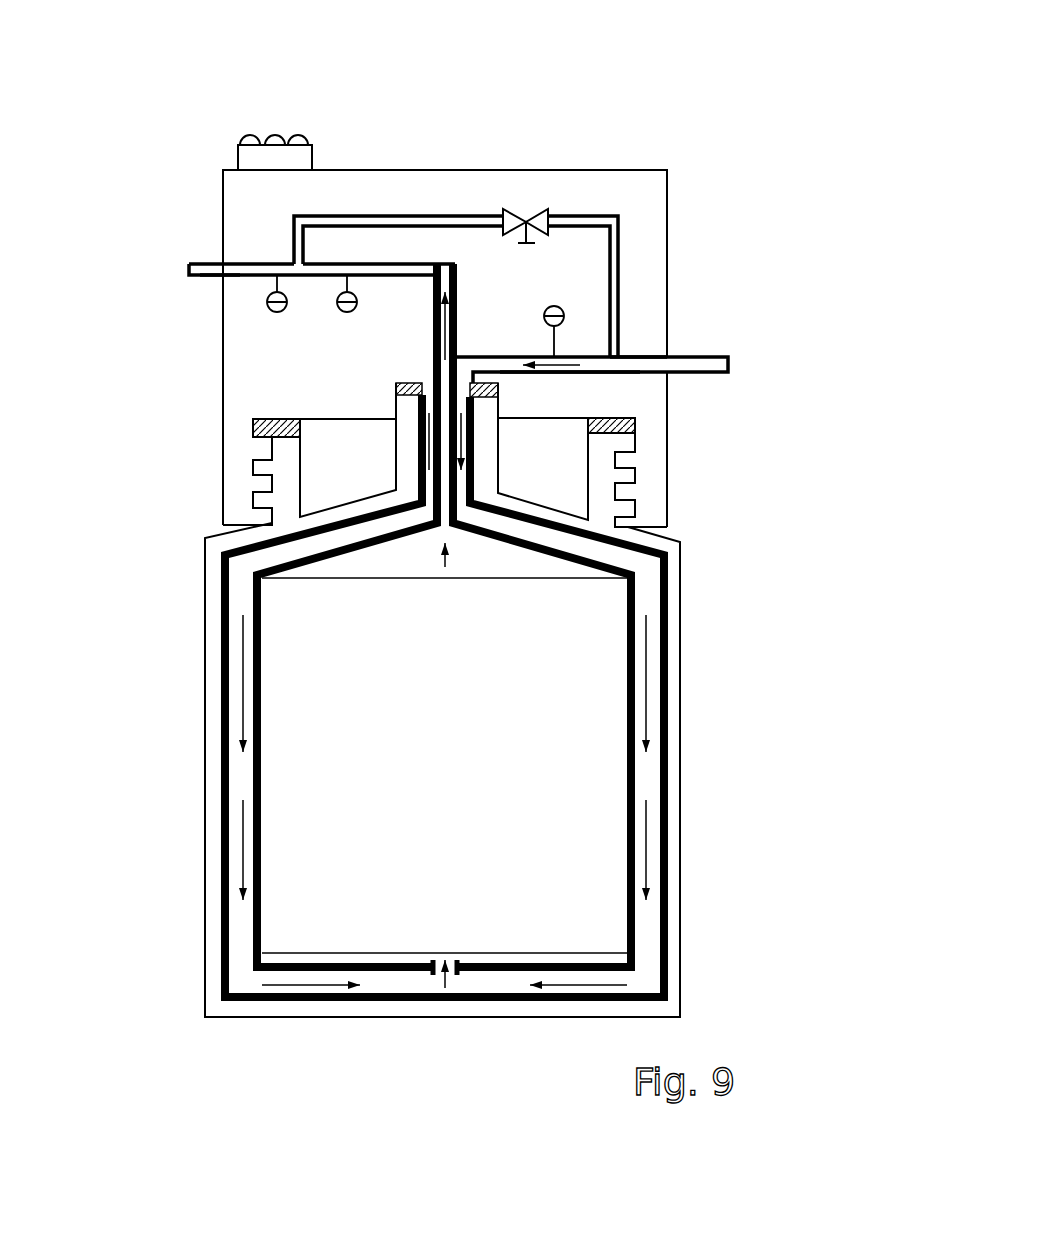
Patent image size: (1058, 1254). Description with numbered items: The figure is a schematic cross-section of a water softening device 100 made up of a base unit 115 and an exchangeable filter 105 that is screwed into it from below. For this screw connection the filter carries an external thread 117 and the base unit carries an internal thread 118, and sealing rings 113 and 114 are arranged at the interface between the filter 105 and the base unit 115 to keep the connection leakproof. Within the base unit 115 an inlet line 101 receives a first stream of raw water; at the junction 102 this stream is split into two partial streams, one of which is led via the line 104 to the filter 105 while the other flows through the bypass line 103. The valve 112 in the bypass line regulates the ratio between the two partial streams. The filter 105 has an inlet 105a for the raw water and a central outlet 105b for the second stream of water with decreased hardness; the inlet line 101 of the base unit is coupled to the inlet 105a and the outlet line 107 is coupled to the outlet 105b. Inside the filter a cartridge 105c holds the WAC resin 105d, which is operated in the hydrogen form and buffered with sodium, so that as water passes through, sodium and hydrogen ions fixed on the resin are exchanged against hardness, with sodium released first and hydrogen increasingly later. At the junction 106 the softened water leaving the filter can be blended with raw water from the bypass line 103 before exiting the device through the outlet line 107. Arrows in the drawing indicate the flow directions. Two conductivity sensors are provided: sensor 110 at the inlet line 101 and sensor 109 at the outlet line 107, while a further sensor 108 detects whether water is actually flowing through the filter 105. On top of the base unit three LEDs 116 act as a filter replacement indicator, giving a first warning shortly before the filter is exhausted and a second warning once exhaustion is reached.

The water softening device 100 is at (445, 263).
The inlet line 101 is at (609, 353).
The junction 102 is at (627, 350).
The bypass line 103 is at (627, 240).
The line 104 is at (568, 378).
The exchangeable filter 105 is at (434, 662).
The inlet 105a is at (425, 384).
The outlet 105b is at (440, 378).
The cartridge 105c is at (670, 800).
The WAC resin 105d is at (552, 740).
The junction 106 is at (291, 264).
The outlet line 107 is at (240, 283).
The sensor 108 is at (347, 290).
The sensor 109 is at (265, 305).
The sensor 110 is at (566, 305).
The valve 112 is at (523, 208).
The sealing ring 113 is at (393, 388).
The sealing ring 114 is at (253, 428).
The base unit 115 is at (445, 340).
The LEDs 116 is at (278, 133).
The external thread 117 is at (641, 492).
The internal thread 118 is at (676, 472).